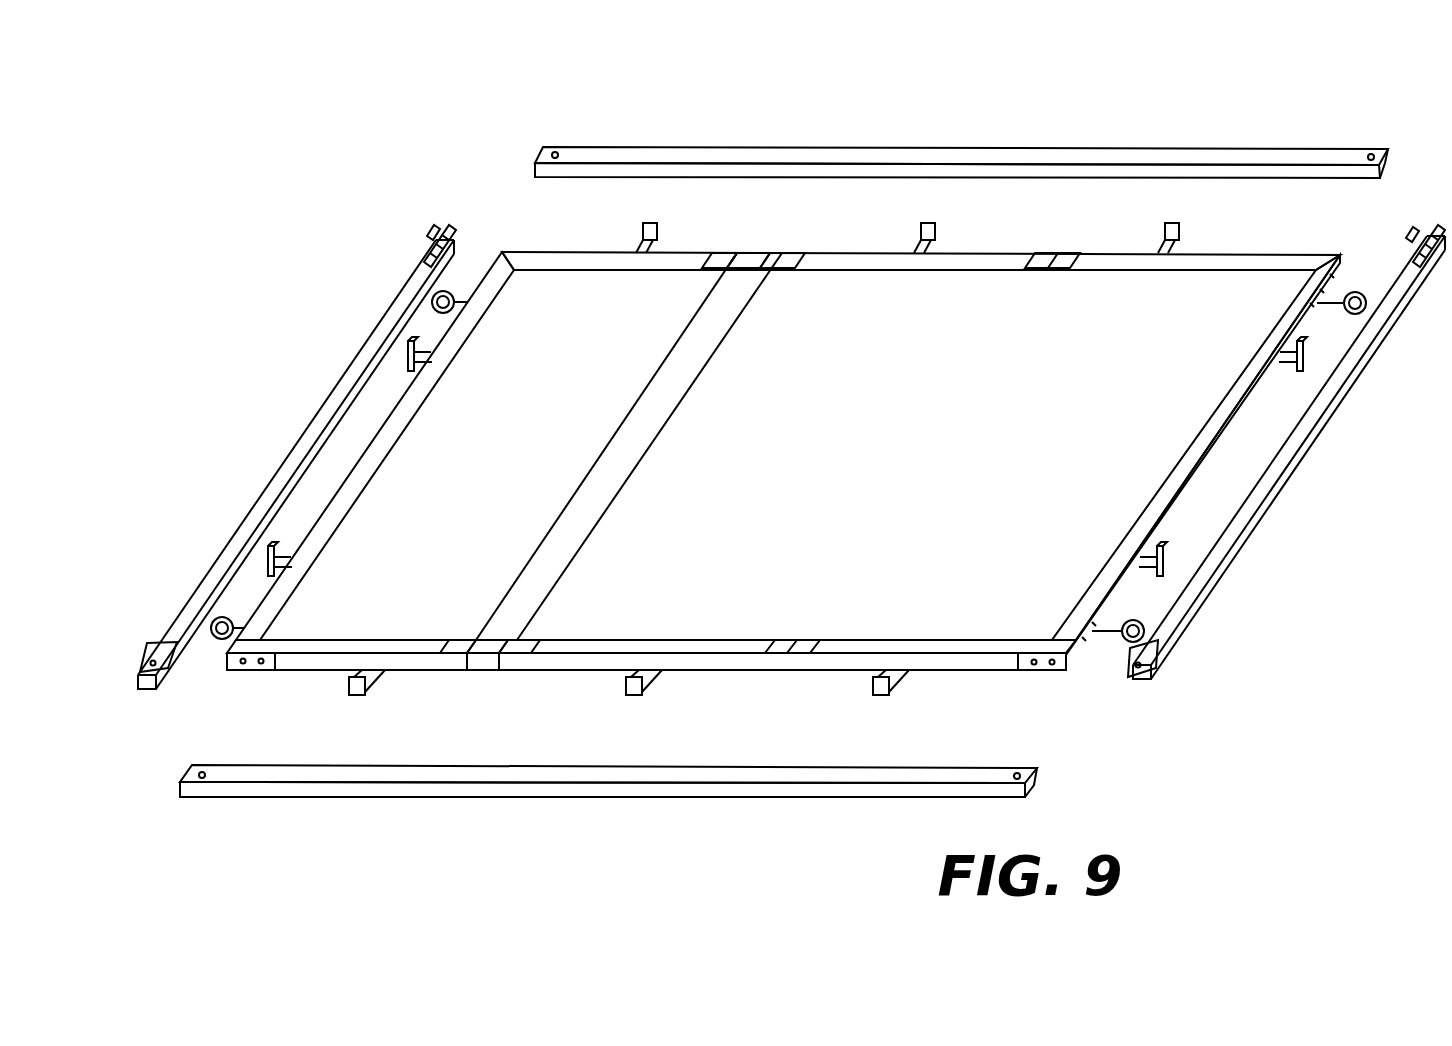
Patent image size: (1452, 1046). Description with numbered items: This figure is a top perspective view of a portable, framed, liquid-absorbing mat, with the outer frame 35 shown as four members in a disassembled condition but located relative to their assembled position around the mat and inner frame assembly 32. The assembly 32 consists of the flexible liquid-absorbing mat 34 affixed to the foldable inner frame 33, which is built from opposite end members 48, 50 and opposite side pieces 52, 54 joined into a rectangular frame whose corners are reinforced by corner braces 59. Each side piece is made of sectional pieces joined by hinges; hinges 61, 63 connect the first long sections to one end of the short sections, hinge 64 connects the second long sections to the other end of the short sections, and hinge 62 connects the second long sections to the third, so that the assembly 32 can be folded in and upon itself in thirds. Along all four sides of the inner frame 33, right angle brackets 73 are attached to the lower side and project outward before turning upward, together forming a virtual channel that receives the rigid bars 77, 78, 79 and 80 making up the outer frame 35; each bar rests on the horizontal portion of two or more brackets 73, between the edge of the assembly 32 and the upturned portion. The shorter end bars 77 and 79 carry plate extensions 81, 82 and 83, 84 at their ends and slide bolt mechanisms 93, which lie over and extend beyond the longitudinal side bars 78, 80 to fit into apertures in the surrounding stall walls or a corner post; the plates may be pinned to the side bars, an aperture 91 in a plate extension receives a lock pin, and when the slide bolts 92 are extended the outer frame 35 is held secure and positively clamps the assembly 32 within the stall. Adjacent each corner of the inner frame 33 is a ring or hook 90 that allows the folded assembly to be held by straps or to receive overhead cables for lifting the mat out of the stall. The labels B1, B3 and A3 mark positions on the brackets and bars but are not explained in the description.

The mat and inner frame assembly 32 is at (780, 467).
The inner frame 33 is at (416, 678).
The mat 34 is at (1078, 427).
The outer frame 35 is at (437, 803).
The end member 48 is at (400, 432).
The end member 50 is at (1085, 605).
The side piece 52 is at (405, 640).
The side piece 54 is at (626, 270).
The corner brace 59 is at (252, 672).
The hinge 61 is at (455, 640).
The hinge 62 is at (535, 640).
The hinge 63 is at (710, 252).
The hinge 64 is at (780, 252).
The right angle bracket 73 is at (645, 226).
The rigid framing bar 77 is at (1258, 508).
The rigid framing bar 78 is at (605, 798).
The rigid framing bar 79 is at (303, 432).
The rigid framing bar 80 is at (815, 148).
The plate extension 81 is at (1160, 668).
The plate extension 82 is at (1434, 268).
The plate extension 83 is at (160, 645).
The plate extension 84 is at (425, 248).
The ring or hook 90 is at (455, 297).
The aperture 91 is at (150, 672).
The slide bolt 92 is at (434, 228).
The slide bolt mechanism 93 is at (1425, 240).
The bracket B1 is at (1298, 350).
The bar side B3 is at (725, 441).
The bar side A3 is at (771, 471).